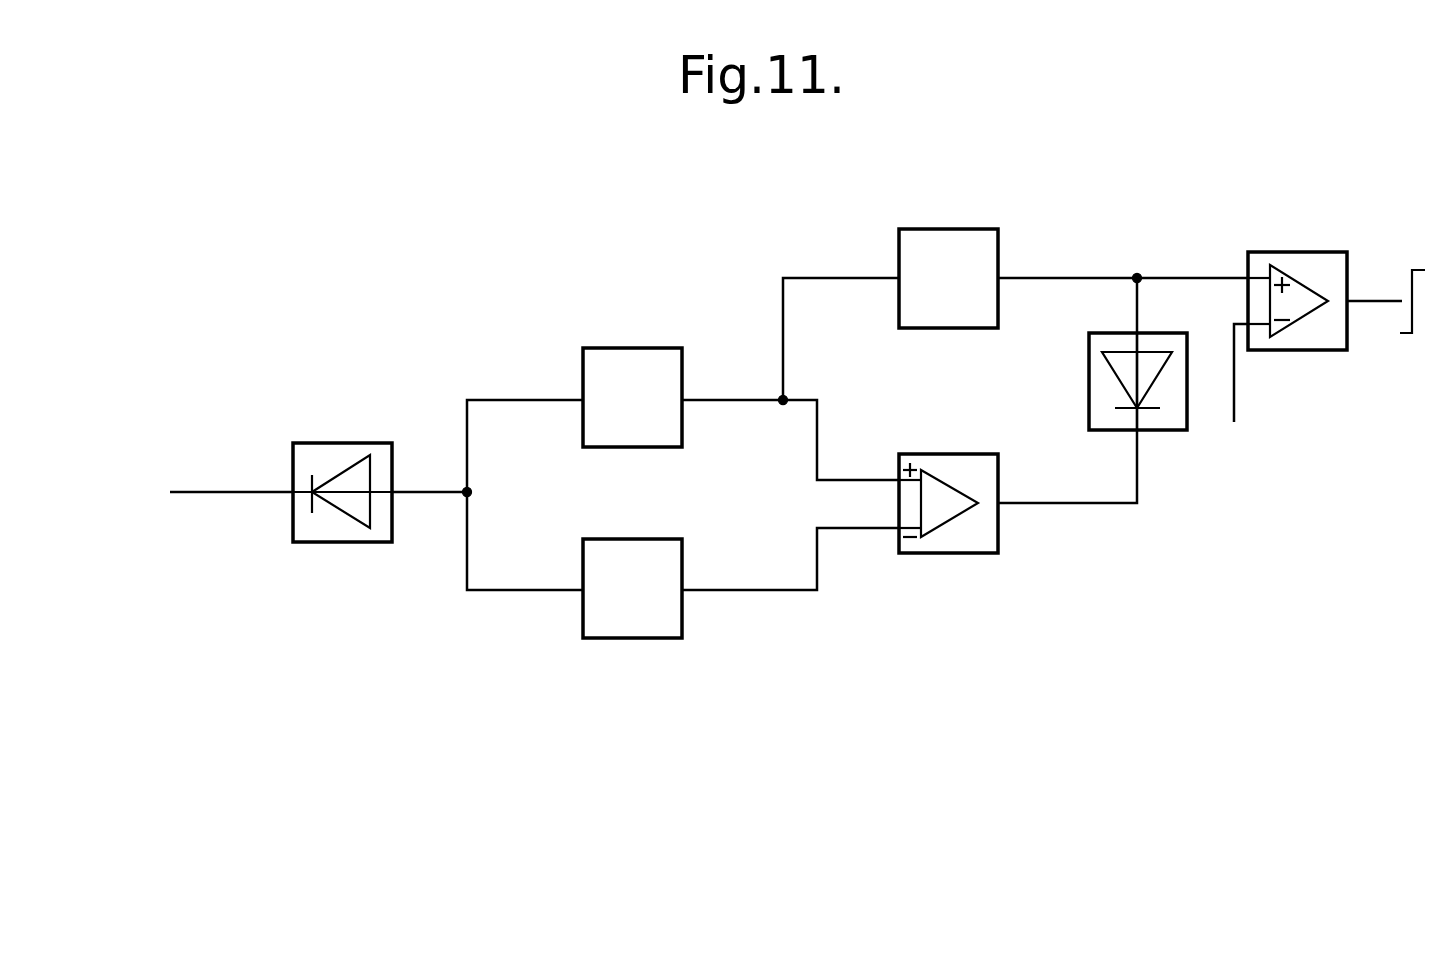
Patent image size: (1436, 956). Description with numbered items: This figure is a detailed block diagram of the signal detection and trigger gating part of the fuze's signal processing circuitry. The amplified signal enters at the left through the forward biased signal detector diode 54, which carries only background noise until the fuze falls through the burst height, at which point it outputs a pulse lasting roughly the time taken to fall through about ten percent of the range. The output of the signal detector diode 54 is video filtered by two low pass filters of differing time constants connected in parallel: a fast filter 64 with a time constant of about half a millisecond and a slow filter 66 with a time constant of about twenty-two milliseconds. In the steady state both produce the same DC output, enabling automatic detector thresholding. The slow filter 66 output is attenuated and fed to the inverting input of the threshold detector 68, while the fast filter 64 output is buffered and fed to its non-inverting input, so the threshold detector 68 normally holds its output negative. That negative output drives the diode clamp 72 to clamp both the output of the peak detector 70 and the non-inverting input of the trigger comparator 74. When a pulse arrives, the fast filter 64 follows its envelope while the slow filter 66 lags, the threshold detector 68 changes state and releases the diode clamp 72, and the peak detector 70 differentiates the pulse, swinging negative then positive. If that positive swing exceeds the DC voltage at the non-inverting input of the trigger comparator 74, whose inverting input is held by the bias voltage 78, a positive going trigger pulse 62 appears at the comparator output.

The signal detector diode 54 is at (345, 543).
The trigger pulse 62 is at (1420, 334).
The fast filter 64 is at (633, 348).
The slow filter 66 is at (633, 638).
The threshold detector 68 is at (955, 553).
The peak detector 70 is at (948, 229).
The diode clamp 72 is at (1175, 431).
The trigger comparator 74 is at (1322, 351).
The bias voltage 78 is at (1235, 390).